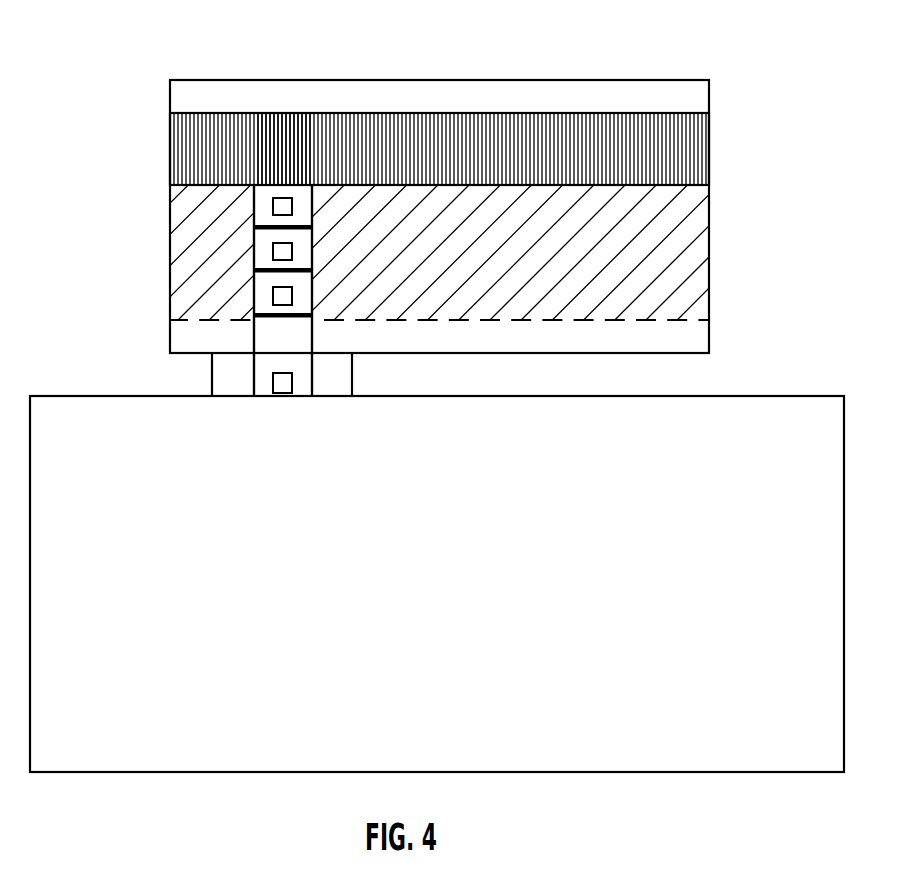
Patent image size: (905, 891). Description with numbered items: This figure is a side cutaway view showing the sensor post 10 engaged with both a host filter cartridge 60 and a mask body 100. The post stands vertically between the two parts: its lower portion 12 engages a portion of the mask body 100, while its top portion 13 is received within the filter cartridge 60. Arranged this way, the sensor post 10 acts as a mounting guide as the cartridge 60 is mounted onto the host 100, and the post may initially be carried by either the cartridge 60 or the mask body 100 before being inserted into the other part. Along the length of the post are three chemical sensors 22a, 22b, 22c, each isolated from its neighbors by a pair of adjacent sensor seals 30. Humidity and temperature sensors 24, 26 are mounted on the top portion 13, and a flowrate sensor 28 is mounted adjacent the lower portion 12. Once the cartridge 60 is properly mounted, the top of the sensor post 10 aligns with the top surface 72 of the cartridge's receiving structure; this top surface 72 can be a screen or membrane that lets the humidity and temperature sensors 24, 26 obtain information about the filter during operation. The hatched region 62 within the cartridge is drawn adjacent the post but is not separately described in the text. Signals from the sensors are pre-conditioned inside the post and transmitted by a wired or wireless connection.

The sensor post 10 is at (303, 222).
The lower portion 12 is at (250, 382).
The top portion 13 is at (254, 185).
The chemical sensor 22a is at (254, 208).
The chemical sensor 22b is at (254, 255).
The chemical sensor 22c is at (254, 296).
The humidity sensor 24 is at (295, 167).
The temperature sensor 26 is at (295, 167).
The flowrate sensor 28 is at (287, 396).
The sensor seals 30 is at (312, 227).
The host filter cartridge 60 is at (413, 137).
The insulating layer 62 is at (652, 236).
The top surface 72 is at (267, 167).
The mask body 100 is at (482, 453).